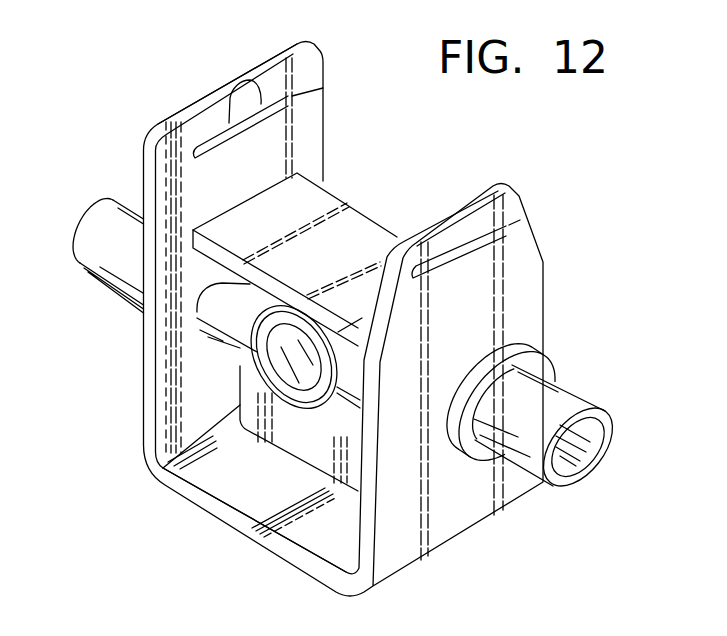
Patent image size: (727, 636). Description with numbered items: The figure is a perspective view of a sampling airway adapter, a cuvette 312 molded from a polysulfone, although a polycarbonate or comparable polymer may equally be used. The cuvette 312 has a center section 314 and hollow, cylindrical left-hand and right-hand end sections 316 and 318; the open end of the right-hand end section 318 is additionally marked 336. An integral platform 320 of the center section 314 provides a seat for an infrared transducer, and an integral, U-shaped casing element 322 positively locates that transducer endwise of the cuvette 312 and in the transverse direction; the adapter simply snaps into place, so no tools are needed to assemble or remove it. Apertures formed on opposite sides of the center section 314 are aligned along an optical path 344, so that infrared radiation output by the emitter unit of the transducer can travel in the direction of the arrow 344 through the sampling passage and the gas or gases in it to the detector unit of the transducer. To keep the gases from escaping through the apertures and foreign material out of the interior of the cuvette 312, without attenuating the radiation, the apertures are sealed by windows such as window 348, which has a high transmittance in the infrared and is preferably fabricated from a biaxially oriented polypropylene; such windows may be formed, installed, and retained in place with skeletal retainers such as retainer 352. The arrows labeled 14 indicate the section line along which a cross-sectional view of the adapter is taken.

The sampling airway adapter 312 is at (557, 208).
The center section 314 is at (218, 392).
The left-hand end section 316 is at (86, 270).
The right-hand end section 318 is at (560, 388).
The platform 320 is at (337, 193).
The U-shaped casing element 322 is at (238, 70).
The bore of boss 336 is at (590, 487).
The optical path 344 is at (236, 403).
The window 348 is at (300, 393).
The skeletal retainer 352 is at (232, 325).
The section line 14 is at (80, 217).